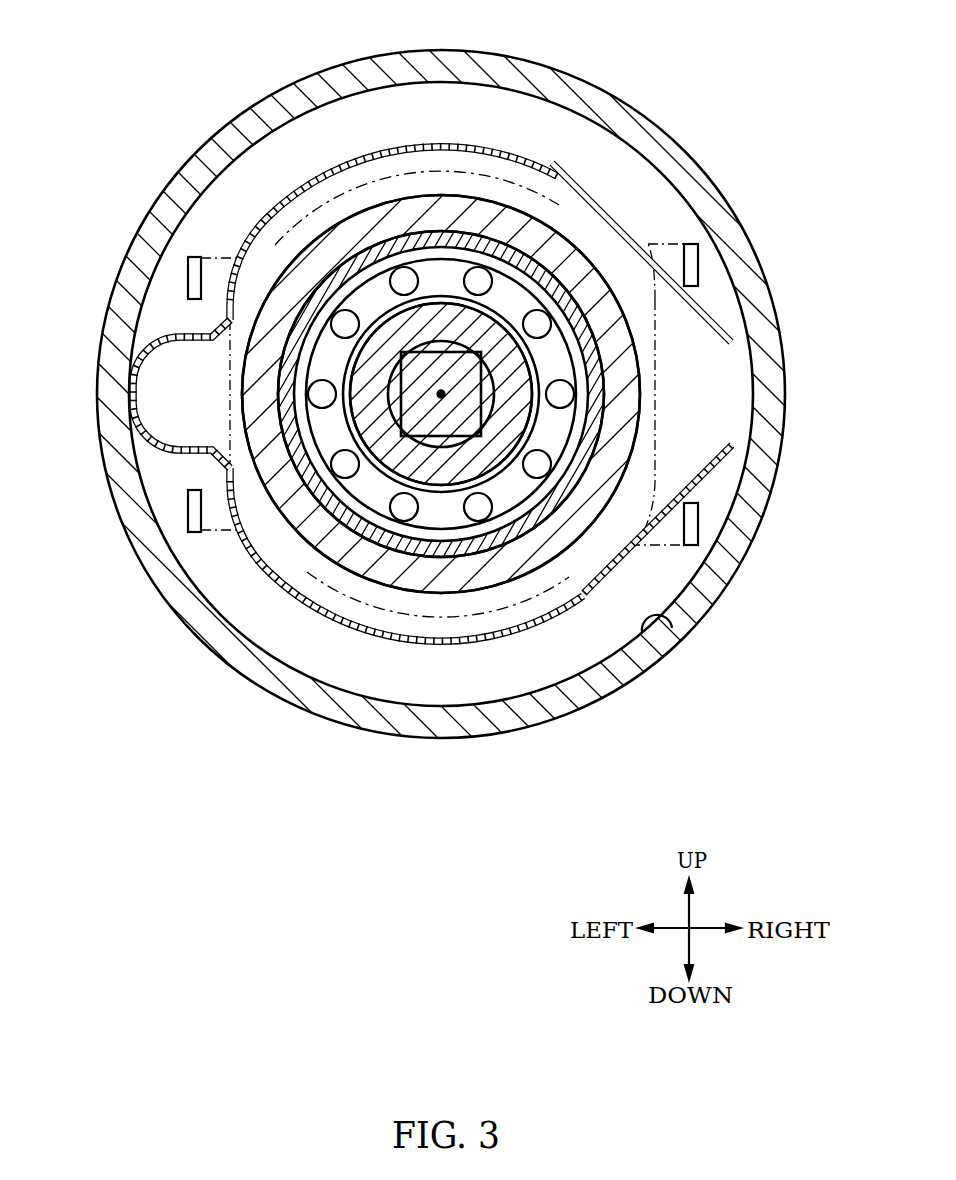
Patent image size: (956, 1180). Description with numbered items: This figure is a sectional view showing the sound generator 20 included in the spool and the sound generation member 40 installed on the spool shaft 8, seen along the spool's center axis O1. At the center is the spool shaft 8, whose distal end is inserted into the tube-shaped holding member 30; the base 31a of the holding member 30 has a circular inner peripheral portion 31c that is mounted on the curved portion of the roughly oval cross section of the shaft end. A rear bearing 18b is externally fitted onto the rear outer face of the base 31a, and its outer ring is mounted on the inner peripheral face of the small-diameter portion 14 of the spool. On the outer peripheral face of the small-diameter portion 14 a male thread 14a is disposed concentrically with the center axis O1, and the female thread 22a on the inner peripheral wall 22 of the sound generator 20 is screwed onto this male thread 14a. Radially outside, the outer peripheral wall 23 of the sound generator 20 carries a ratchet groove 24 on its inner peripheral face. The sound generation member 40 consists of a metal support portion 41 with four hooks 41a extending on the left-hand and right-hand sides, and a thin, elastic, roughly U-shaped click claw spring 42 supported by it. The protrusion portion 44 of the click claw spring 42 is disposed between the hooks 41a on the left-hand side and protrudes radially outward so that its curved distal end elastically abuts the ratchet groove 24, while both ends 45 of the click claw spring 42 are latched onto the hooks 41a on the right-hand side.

The spool shaft 8 is at (418, 405).
The small-diameter portion 14 is at (554, 222).
The male thread 14a is at (592, 427).
The rear bearing 18b is at (482, 438).
The sound generator 20 is at (431, 324).
The inner peripheral wall 22 is at (471, 212).
The female thread 22a is at (610, 353).
The outer peripheral wall 23 is at (708, 189).
The ratchet groove 24 is at (662, 632).
The holding member 30 is at (372, 553).
The base 31a is at (445, 440).
The circular inner peripheral portion 31c is at (387, 437).
The sound generation member 40 is at (439, 401).
The support portion 41 is at (600, 688).
The hooks 41a is at (188, 278).
The click claw spring 42 is at (360, 151).
The protrusion portion 44 is at (125, 357).
The both ends 45 is at (703, 300).
The center axis O1 is at (441, 394).